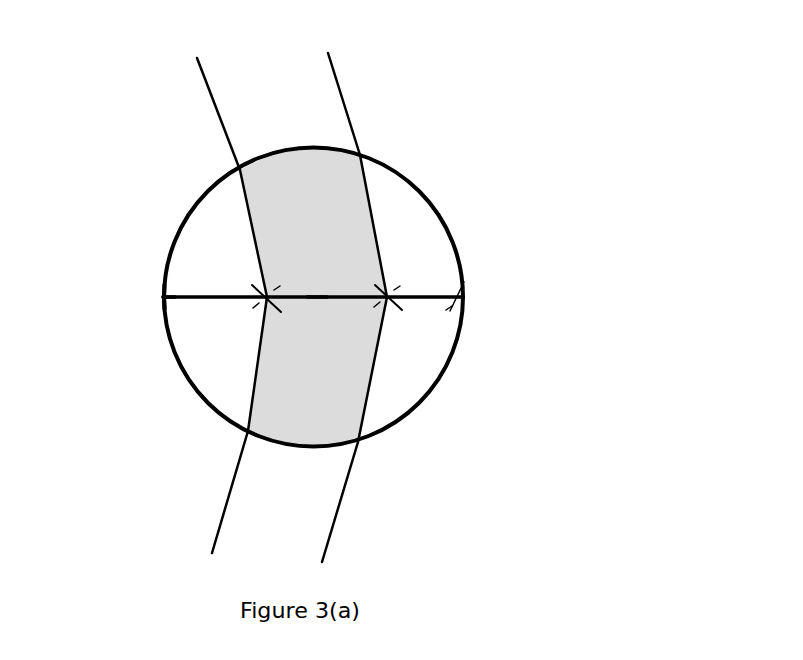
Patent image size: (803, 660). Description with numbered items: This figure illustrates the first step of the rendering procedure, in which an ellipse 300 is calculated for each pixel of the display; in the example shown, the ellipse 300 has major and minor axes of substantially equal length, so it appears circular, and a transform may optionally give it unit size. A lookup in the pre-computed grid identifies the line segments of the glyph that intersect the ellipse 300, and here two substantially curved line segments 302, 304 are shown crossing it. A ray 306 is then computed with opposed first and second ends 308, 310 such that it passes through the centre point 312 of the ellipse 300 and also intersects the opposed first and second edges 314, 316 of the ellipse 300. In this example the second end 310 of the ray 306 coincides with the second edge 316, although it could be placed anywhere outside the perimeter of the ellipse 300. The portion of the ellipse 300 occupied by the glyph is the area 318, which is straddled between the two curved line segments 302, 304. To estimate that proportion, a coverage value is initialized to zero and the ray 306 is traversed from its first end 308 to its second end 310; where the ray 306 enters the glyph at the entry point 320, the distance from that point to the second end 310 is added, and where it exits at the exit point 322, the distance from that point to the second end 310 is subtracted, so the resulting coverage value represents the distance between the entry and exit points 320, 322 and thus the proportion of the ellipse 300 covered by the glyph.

The ellipse 300 is at (445, 223).
The curved line segment 302 is at (215, 108).
The curved line segment 304 is at (343, 103).
The ray 306 is at (418, 297).
The first end 308 is at (163, 298).
The second end 310 is at (463, 298).
The centre point 312 is at (317, 297).
The first edge 314 is at (163, 297).
The second edge 316 is at (463, 297).
The area of the glyph 318 is at (302, 163).
The entry point 320 is at (260, 300).
The exit point 322 is at (385, 300).